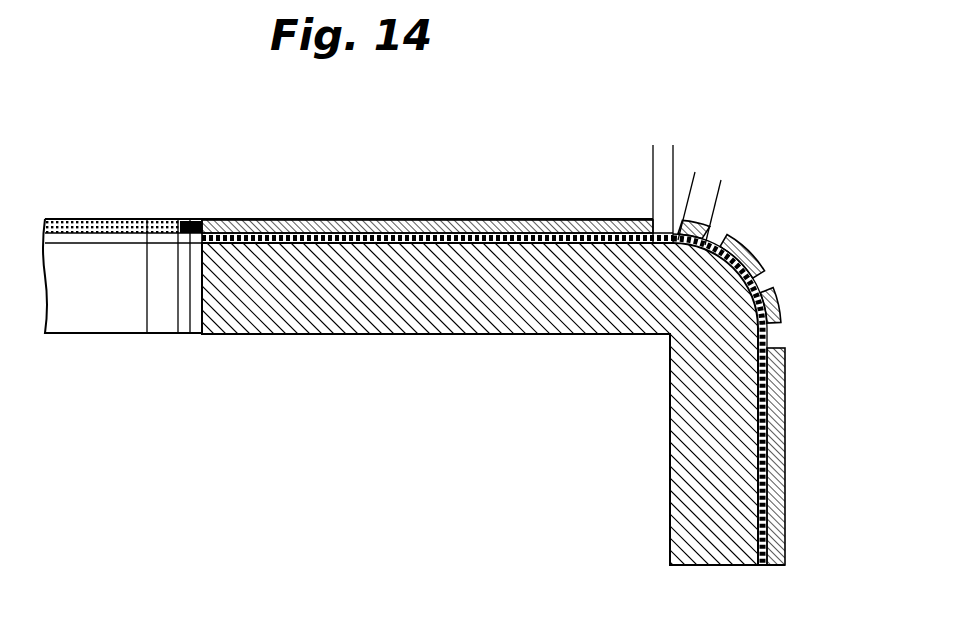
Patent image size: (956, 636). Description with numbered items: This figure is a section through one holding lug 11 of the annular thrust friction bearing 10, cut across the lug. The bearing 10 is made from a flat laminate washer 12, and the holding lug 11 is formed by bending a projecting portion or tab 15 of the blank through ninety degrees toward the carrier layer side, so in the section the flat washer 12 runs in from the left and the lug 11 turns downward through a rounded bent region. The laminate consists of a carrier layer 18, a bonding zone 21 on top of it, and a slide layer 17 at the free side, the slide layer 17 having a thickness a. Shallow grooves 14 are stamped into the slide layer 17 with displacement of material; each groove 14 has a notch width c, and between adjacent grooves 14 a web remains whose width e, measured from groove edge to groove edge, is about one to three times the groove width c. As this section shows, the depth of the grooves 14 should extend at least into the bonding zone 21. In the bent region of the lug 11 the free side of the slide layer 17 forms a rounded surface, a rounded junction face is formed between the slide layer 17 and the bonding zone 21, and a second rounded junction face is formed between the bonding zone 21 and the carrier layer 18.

The annular thrust friction bearing 10 is at (756, 108).
The holding lug 11 is at (664, 461).
The annular ring or washer 12 is at (240, 216).
The groove 14 is at (717, 248).
The projecting portion or tab 15 is at (664, 538).
The slide layer 17 is at (494, 222).
The carrier layer 18 is at (381, 312).
The bonding zone 21 is at (735, 278).
The thickness of the slide layer a is at (580, 280).
The groove width c is at (622, 152).
The web width e is at (748, 190).